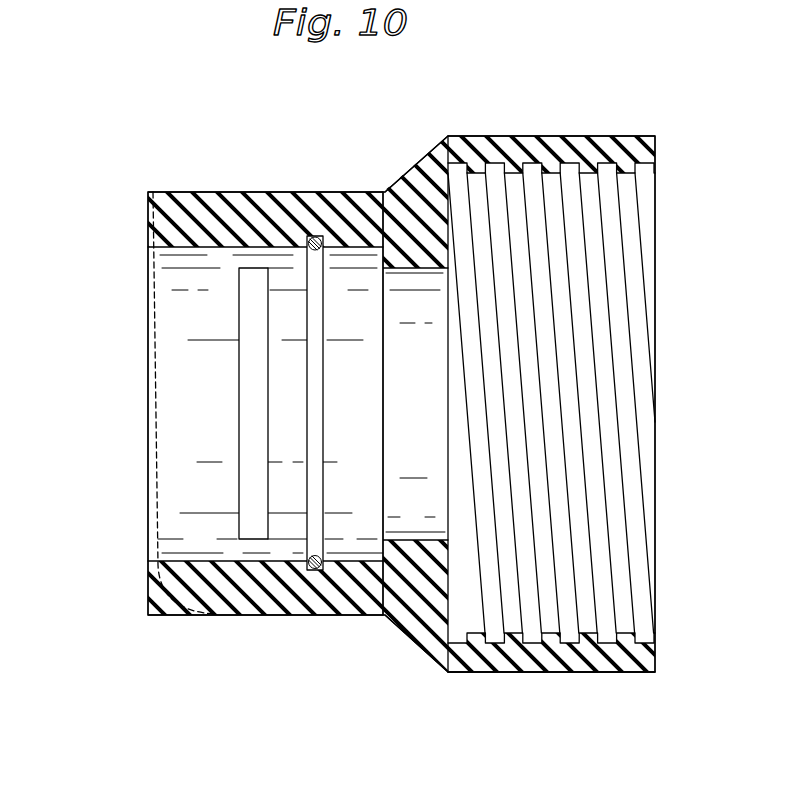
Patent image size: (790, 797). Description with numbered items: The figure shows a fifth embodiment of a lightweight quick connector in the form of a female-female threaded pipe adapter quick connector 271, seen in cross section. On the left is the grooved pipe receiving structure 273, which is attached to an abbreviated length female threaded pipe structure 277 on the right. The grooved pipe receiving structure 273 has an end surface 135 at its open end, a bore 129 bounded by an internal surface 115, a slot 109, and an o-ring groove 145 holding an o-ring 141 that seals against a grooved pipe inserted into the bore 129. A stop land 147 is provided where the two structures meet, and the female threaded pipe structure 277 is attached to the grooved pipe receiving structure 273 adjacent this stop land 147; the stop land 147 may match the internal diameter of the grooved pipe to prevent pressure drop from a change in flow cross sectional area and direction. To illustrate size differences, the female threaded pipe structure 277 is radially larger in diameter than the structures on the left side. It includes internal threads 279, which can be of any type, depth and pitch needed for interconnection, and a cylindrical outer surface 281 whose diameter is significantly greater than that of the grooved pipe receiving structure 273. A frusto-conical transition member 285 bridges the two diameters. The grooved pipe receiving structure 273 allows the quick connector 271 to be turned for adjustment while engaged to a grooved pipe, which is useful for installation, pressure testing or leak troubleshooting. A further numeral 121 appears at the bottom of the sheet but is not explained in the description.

The female-female threaded pipe adapter quick connector 271 is at (200, 100).
The grooved pipe receiving structure 273 is at (161, 172).
The female threaded pipe structure 277 is at (597, 108).
The frusto-conical transition member 285 is at (412, 165).
The internal surface 115 is at (253, 245).
The slot 109 is at (243, 383).
The o-ring 141 is at (319, 251).
The o-ring groove 145 is at (323, 360).
The stop land 147 is at (380, 257).
The bore 129 is at (193, 560).
The end surface 135 is at (148, 578).
The internal threads 279 is at (483, 608).
The cylindrical outer surface 281 is at (568, 672).
The base 121 is at (426, 793).